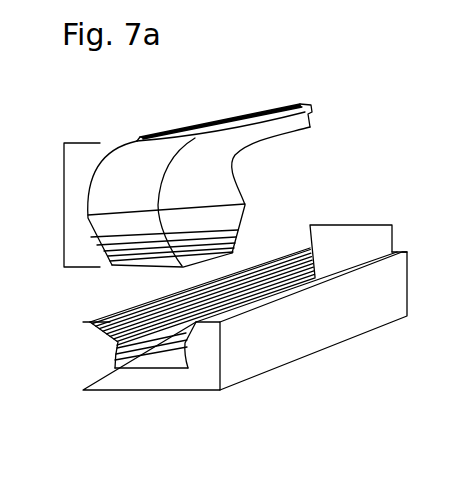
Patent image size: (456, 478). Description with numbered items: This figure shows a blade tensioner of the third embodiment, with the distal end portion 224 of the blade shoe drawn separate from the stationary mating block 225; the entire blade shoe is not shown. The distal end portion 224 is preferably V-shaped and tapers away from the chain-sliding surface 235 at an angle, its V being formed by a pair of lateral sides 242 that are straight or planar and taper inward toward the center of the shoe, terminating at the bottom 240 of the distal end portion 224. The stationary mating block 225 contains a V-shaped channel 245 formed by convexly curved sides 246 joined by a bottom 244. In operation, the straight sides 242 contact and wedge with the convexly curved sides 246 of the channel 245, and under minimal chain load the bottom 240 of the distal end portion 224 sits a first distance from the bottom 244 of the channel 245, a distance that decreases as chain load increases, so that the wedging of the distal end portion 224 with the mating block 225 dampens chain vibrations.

The distal end portion 224 is at (64, 215).
The stationary mating block 225 is at (273, 348).
The chain-sliding surface 235 is at (186, 132).
The bottom of the distal end portion 240 is at (133, 268).
The lateral sides 242 is at (223, 220).
The bottom of the V-shaped channel 244 is at (143, 368).
The V-shaped channel 245 is at (357, 225).
The convexly curved sides 246 is at (92, 322).